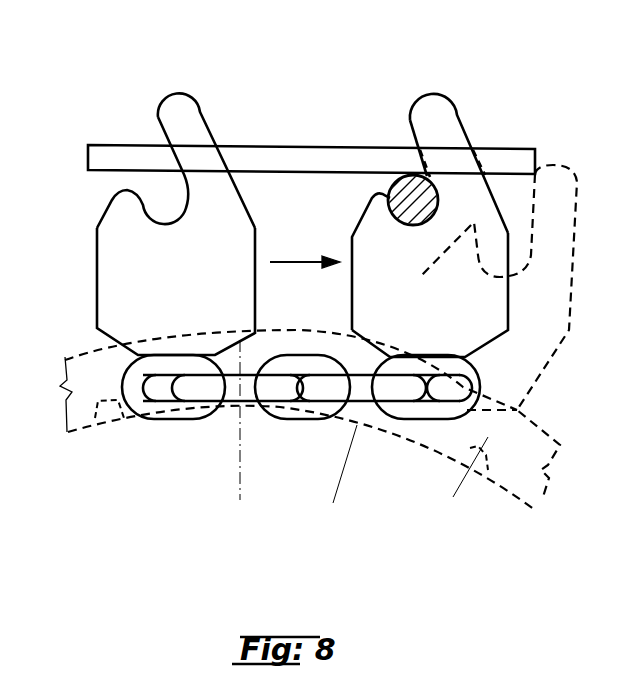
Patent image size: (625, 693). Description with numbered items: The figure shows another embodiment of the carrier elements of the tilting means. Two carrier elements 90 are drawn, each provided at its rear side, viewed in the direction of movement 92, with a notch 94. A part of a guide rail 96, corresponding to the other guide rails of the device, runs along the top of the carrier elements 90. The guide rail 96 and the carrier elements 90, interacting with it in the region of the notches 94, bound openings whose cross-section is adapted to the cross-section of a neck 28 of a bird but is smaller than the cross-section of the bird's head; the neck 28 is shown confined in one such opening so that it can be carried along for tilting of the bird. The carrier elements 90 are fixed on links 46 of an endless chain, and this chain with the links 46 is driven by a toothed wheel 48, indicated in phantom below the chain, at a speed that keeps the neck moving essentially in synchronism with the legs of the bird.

The guide rail 96 is at (270, 146).
The neck 28 is at (396, 176).
The notch 94 is at (158, 194).
The carrier element 90 is at (125, 250).
The direction of movement 92 is at (280, 262).
The link 46 is at (298, 420).
The toothed wheel 48 is at (360, 417).